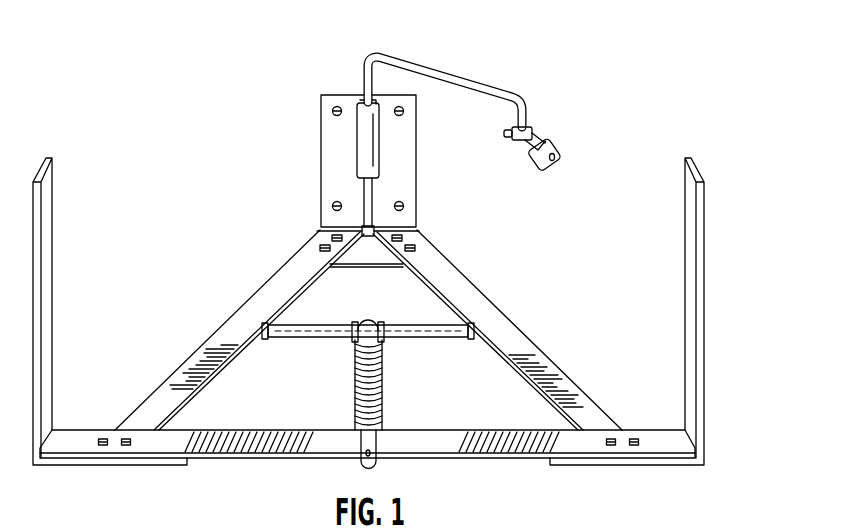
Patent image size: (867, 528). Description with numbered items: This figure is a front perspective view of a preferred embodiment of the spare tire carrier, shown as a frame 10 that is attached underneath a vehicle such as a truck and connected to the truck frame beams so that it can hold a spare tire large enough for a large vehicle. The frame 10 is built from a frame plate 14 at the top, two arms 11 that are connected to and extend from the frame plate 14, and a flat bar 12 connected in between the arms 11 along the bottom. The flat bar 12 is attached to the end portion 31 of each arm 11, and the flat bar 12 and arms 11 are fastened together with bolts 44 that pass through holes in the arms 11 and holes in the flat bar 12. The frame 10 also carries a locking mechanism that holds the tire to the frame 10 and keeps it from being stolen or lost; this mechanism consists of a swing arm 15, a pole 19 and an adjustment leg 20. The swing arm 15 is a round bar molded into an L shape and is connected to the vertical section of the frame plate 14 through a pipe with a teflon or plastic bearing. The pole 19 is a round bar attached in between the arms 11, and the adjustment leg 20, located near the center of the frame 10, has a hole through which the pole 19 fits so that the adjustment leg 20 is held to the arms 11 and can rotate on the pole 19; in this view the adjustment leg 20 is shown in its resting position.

The frame 10 is at (128, 101).
The arms 11 is at (267, 286).
The flat bar 12 is at (298, 447).
The frame plate 14 is at (337, 181).
The swing arm 15 is at (477, 86).
The pole 19 is at (424, 338).
The adjustment leg 20 is at (355, 361).
The end portion 31 is at (111, 401).
The bolts 44 is at (103, 447).